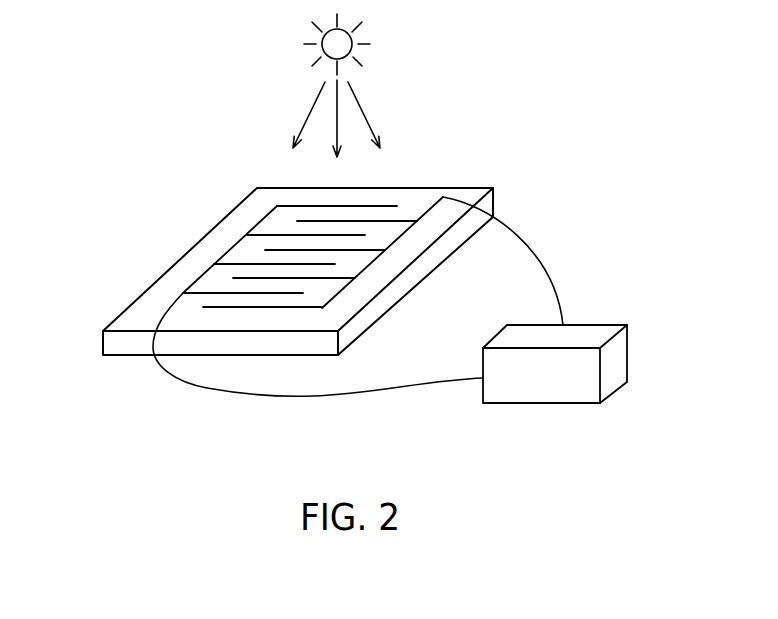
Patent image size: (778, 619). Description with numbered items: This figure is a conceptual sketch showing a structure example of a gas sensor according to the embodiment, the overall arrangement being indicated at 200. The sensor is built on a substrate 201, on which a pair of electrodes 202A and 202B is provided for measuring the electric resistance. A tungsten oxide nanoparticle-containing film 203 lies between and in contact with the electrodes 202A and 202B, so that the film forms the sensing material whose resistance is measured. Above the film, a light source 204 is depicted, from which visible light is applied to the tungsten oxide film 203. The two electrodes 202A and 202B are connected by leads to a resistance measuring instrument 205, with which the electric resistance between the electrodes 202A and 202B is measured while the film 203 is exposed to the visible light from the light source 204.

The solar cell device 200 is at (205, 137).
The substrate 201 is at (103, 348).
The electrode 202A is at (237, 243).
The electrode 202B is at (380, 257).
The tungsten oxide nanoparticle-containing film 203 is at (217, 283).
The light source 204 is at (363, 32).
The resistance measuring instrument 205 is at (617, 358).